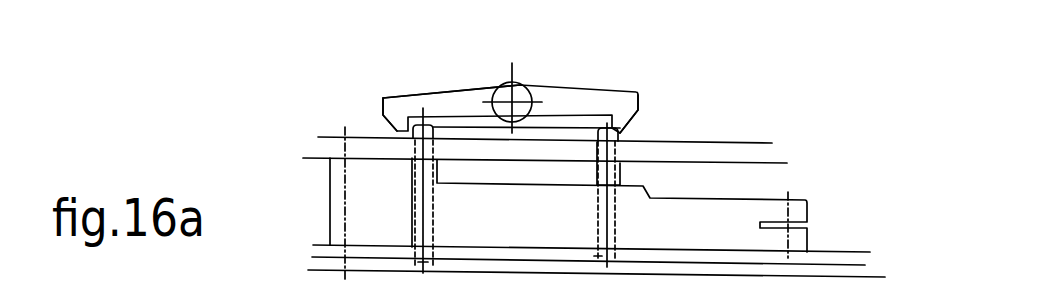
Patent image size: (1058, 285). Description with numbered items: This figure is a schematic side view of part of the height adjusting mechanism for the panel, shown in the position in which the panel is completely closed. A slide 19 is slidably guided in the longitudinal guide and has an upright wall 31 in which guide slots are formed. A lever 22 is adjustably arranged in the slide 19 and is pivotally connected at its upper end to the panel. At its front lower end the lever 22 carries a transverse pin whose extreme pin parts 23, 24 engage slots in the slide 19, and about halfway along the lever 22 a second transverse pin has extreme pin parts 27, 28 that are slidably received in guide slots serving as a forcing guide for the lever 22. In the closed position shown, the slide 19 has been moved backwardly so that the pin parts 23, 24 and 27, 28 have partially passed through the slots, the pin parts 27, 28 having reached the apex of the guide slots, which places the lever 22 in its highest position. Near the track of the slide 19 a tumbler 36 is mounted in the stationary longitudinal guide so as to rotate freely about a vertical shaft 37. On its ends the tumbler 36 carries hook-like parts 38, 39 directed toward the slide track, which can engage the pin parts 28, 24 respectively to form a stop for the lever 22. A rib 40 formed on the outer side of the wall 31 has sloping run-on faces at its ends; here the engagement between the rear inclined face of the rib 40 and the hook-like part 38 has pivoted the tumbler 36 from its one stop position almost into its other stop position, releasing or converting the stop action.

The slide 19 is at (877, 188).
The lever 22 is at (697, 223).
The pin part 23 is at (425, 266).
The pin part 24 is at (412, 128).
The pin part 27 is at (600, 256).
The pin part 28 is at (615, 138).
The upright wall 31 is at (758, 161).
The tumbler 36 is at (568, 100).
The vertical shaft 37 is at (513, 101).
The hook-like part 38 is at (626, 108).
The hook-like part 39 is at (397, 117).
The rib 40 is at (452, 102).